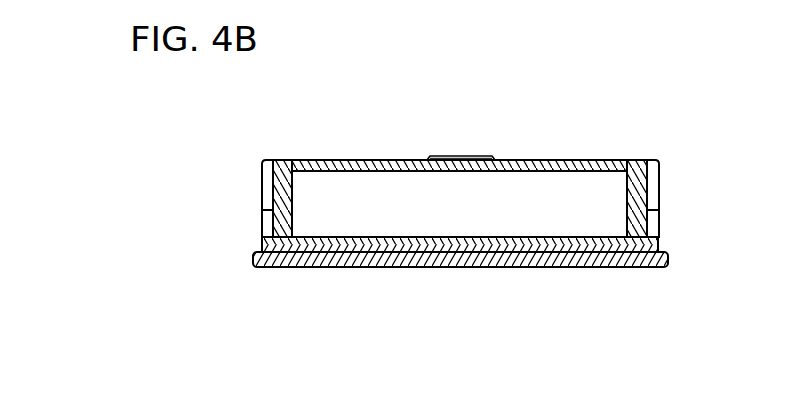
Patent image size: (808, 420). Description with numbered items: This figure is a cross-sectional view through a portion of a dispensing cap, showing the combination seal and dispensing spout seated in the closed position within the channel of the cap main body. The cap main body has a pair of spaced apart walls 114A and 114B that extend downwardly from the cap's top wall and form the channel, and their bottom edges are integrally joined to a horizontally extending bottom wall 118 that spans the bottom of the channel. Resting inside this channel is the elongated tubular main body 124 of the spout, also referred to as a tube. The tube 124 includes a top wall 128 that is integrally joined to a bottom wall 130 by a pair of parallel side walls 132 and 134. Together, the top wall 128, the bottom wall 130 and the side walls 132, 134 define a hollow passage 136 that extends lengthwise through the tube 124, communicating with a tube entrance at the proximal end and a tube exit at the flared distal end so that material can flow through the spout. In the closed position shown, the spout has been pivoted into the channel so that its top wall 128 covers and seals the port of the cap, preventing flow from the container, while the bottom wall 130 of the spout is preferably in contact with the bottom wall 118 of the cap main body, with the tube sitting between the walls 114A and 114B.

The tubular main body 124 is at (596, 95).
The bottom wall 118 is at (628, 268).
The bottom wall 130 is at (550, 248).
The top wall 128 is at (505, 163).
The hollow passage 136 is at (405, 202).
The wall 114A is at (272, 161).
The wall 114B is at (650, 160).
The side wall 132 is at (270, 187).
The side wall 134 is at (653, 183).